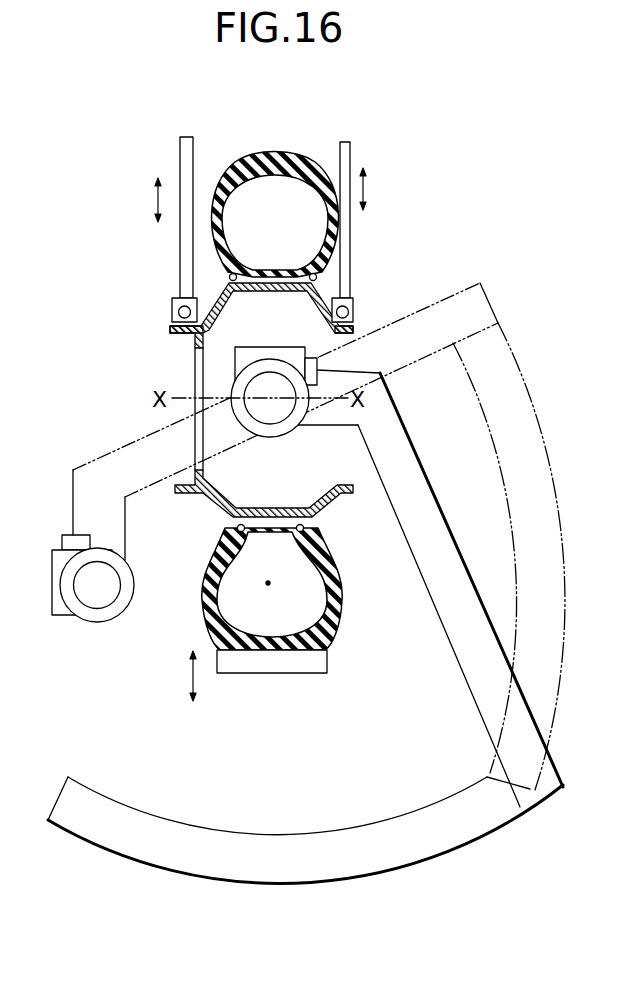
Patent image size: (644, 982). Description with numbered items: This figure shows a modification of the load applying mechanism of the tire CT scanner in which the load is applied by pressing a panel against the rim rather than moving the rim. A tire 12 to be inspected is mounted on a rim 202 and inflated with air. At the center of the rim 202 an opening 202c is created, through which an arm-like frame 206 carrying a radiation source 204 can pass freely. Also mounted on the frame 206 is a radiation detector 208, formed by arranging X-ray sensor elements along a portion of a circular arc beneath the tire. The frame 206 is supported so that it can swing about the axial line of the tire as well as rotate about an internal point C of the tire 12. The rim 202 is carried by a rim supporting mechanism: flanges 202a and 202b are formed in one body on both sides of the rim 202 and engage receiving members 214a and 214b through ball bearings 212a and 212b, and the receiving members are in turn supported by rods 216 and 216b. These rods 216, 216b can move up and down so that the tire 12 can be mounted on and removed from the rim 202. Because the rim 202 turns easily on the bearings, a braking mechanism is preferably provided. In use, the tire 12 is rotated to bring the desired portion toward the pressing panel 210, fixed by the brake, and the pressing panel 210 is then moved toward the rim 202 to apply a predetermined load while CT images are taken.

The tire 12 is at (270, 152).
The rod 216 is at (180, 155).
The rod 216b is at (350, 160).
The receiving member 214a is at (180, 298).
The receiving member 214b is at (350, 300).
The ball bearing 212a is at (177, 310).
The ball bearing 212b is at (356, 312).
The flange 202a is at (181, 331).
The flange 202b is at (352, 335).
The opening 202c is at (198, 348).
The rim 202 is at (212, 501).
The radiation source 204 is at (277, 418).
The frame 206 is at (447, 623).
The pressing panel 210 is at (260, 673).
The radiation detector 208 is at (309, 870).
The internal point of the tire C is at (270, 585).